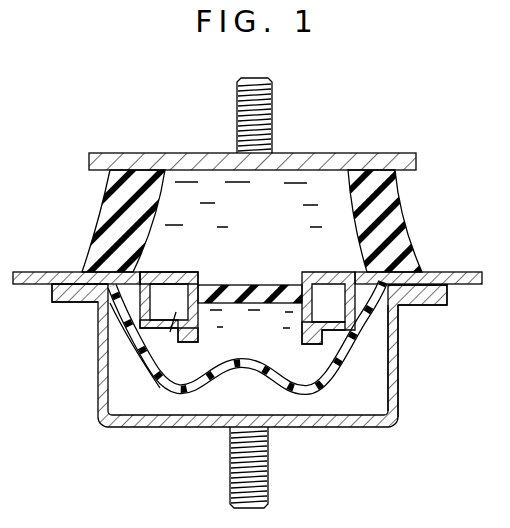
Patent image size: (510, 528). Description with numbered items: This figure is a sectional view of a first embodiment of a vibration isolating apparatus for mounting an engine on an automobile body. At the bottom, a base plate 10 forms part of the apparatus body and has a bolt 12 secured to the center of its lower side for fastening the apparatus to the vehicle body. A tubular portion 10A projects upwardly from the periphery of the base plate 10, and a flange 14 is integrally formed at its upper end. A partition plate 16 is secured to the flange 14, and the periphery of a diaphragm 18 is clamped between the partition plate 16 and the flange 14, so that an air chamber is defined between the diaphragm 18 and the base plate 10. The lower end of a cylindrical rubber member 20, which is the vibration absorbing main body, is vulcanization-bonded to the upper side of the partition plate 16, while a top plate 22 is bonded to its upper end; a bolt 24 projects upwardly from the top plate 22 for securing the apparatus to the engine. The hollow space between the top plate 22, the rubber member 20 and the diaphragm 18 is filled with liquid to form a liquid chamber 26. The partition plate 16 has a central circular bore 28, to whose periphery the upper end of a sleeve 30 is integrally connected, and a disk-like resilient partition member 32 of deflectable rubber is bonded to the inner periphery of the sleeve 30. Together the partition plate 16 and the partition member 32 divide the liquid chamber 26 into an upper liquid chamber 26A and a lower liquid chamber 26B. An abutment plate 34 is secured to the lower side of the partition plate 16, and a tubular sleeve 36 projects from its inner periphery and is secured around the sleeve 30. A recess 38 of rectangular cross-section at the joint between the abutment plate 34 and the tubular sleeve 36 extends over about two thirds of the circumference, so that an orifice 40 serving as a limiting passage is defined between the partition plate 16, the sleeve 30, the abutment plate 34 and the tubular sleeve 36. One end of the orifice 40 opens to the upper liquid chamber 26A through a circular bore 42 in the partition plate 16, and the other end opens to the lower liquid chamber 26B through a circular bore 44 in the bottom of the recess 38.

The base plate 10 is at (318, 423).
The tubular portion 10A is at (400, 377).
The bolt 12 is at (268, 482).
The flange 14 is at (433, 305).
The partition plate 16 is at (442, 272).
The diaphragm 18 is at (350, 373).
The cylindrical rubber member 20 is at (397, 240).
The top plate 22 is at (335, 153).
The bolt 24 is at (272, 116).
The liquid chamber 26 is at (158, 237).
The upper liquid chamber 26A is at (289, 222).
The lower liquid chamber 26B is at (277, 340).
The circular bore 28 is at (210, 271).
The sleeve 30 is at (195, 334).
The resilient partition member 32 is at (262, 292).
The abutment plate 34 is at (100, 328).
The tubular sleeve 36 is at (150, 328).
The recess 38 is at (150, 330).
The orifice 40 is at (170, 332).
The circular bore 42 is at (165, 271).
The circular bore 44 is at (330, 324).